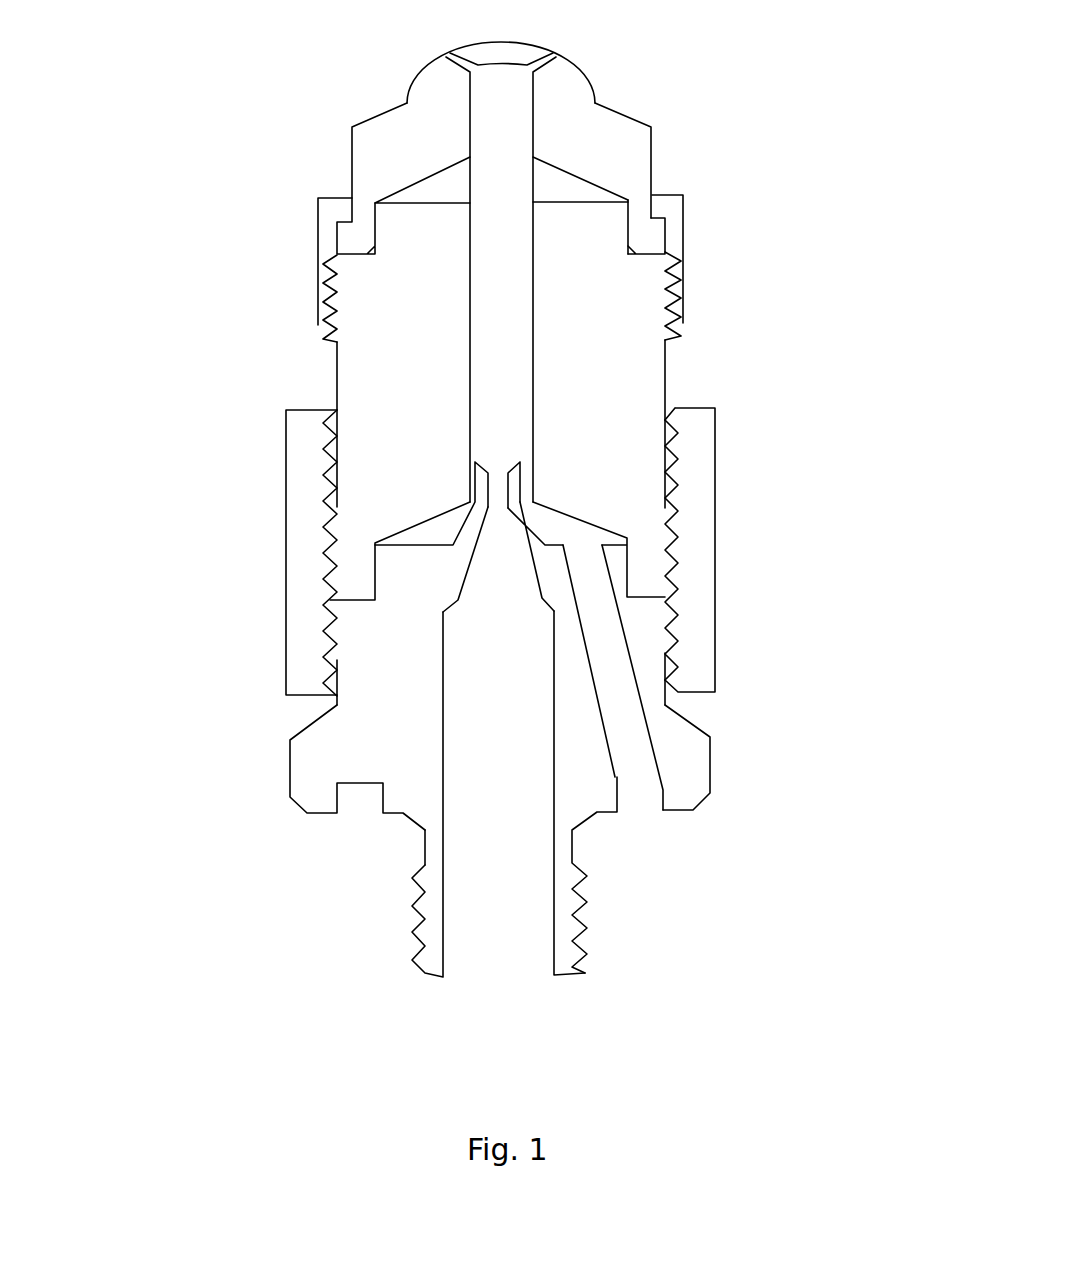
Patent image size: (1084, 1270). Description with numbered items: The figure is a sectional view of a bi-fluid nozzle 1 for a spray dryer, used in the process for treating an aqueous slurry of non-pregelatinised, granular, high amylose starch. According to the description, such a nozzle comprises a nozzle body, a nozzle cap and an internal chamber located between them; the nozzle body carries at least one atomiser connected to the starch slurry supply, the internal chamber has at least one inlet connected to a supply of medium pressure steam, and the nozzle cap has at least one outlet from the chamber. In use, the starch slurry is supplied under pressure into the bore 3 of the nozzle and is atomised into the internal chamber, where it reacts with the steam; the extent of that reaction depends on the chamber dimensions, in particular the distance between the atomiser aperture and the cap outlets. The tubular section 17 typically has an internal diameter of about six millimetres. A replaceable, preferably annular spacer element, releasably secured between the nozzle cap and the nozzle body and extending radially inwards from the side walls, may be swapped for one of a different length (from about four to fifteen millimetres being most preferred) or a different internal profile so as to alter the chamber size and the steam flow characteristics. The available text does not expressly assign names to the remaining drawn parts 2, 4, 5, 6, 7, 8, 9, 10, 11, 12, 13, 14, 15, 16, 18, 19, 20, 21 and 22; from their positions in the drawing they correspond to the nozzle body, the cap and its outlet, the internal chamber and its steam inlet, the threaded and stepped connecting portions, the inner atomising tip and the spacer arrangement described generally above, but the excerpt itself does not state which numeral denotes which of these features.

The injection nozzle device 1 is at (506, 531).
The main body 2 is at (323, 755).
The bore 3 is at (445, 913).
The inner insert 4 is at (532, 573).
The insert tip 5 is at (495, 472).
The threaded outlet connection 6 is at (570, 963).
The inclined duct 7 is at (663, 810).
The annular passage 8 is at (573, 532).
The dome-shaped head 9 is at (628, 148).
The right nut 10 is at (637, 397).
The groove 11 is at (643, 242).
The right collar 12 is at (668, 205).
The left collar 13 is at (322, 239).
The left nut 14 is at (286, 548).
The bore wall 15 is at (533, 350).
The shoulder 16 is at (433, 203).
The tubular section 17 is at (508, 298).
The bore wall 18 is at (470, 483).
The head cap 19 is at (490, 112).
The top opening 20 is at (518, 75).
The shoulder 21 is at (580, 176).
The central bore 22 is at (365, 279).